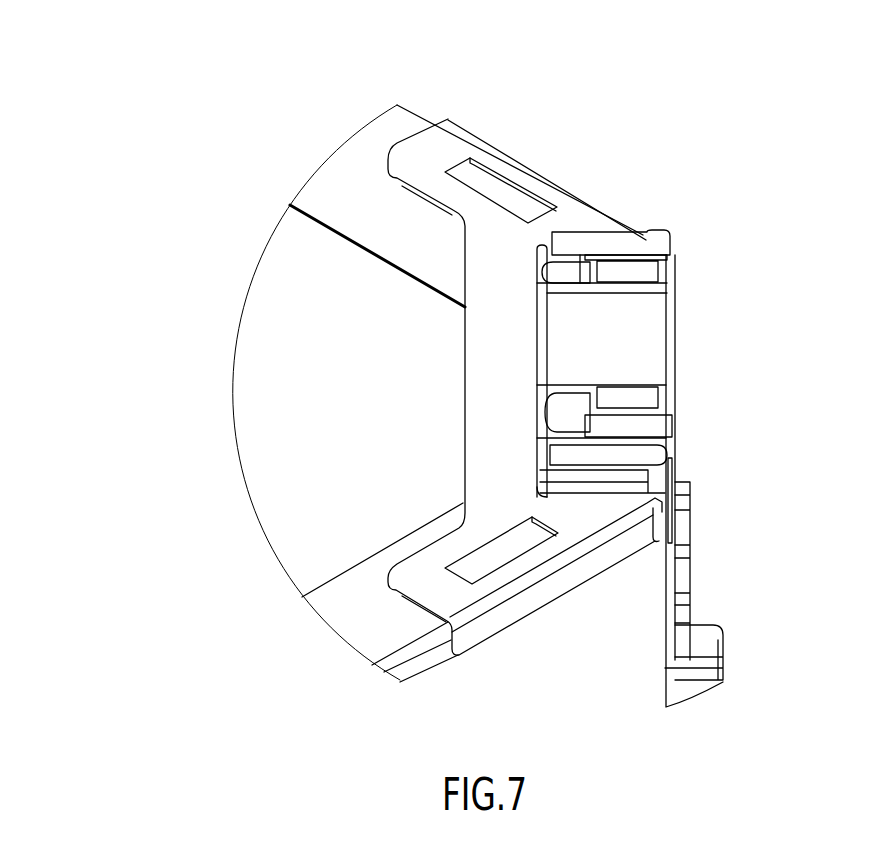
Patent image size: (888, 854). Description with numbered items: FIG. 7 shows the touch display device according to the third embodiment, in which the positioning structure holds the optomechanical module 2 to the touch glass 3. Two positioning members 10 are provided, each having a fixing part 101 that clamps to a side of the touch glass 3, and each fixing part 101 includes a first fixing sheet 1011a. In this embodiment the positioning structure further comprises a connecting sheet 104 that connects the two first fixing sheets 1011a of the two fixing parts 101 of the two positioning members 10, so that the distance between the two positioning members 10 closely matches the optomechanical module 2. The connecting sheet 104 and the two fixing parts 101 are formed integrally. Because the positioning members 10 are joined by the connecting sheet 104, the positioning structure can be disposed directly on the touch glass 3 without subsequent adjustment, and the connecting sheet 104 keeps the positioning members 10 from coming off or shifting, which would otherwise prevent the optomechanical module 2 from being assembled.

The optomechanical module 2 is at (688, 315).
The touch glass 3 is at (253, 448).
The positioning member 10 is at (405, 415).
The fixing part 101 is at (562, 418).
The connecting sheet 104 is at (340, 318).
The first fixing sheet 1011a is at (511, 418).